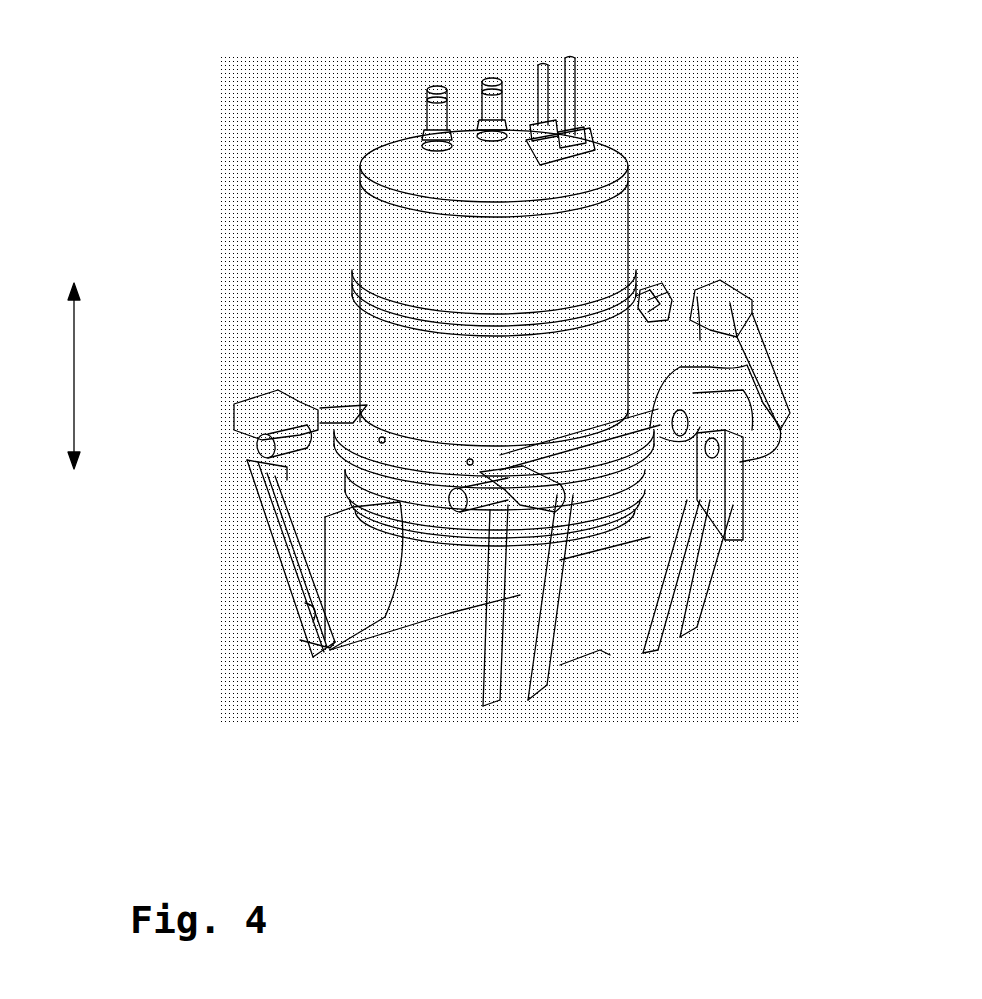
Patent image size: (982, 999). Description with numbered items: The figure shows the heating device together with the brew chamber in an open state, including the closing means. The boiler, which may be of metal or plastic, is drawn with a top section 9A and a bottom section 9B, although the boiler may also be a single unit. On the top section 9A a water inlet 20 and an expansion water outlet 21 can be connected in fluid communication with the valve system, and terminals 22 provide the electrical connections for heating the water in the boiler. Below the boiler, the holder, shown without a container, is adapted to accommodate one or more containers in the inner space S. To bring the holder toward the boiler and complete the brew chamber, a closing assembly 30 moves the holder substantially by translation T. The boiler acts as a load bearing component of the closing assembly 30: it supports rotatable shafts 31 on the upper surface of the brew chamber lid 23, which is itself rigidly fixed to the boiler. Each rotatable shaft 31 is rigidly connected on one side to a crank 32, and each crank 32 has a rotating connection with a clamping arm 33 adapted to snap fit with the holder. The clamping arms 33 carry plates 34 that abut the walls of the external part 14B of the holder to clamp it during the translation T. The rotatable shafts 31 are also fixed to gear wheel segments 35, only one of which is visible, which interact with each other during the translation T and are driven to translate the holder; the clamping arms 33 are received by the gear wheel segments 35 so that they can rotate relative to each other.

The translation T is at (52, 376).
The top section 9A is at (373, 353).
The bottom section 9B is at (367, 218).
The water inlet 20 is at (487, 105).
The expansion water outlet 21 is at (427, 117).
The terminals 22 is at (548, 78).
The brew chamber lid 23 is at (373, 479).
The closing assembly 30 is at (795, 480).
The rotatable shafts 31 is at (738, 362).
The cranks 32 is at (270, 413).
The clamping arm 33 is at (267, 520).
The plates 34 is at (320, 620).
The gear wheel segments 35 is at (688, 290).
The inner space S is at (450, 613).
The external part 14B is at (447, 613).